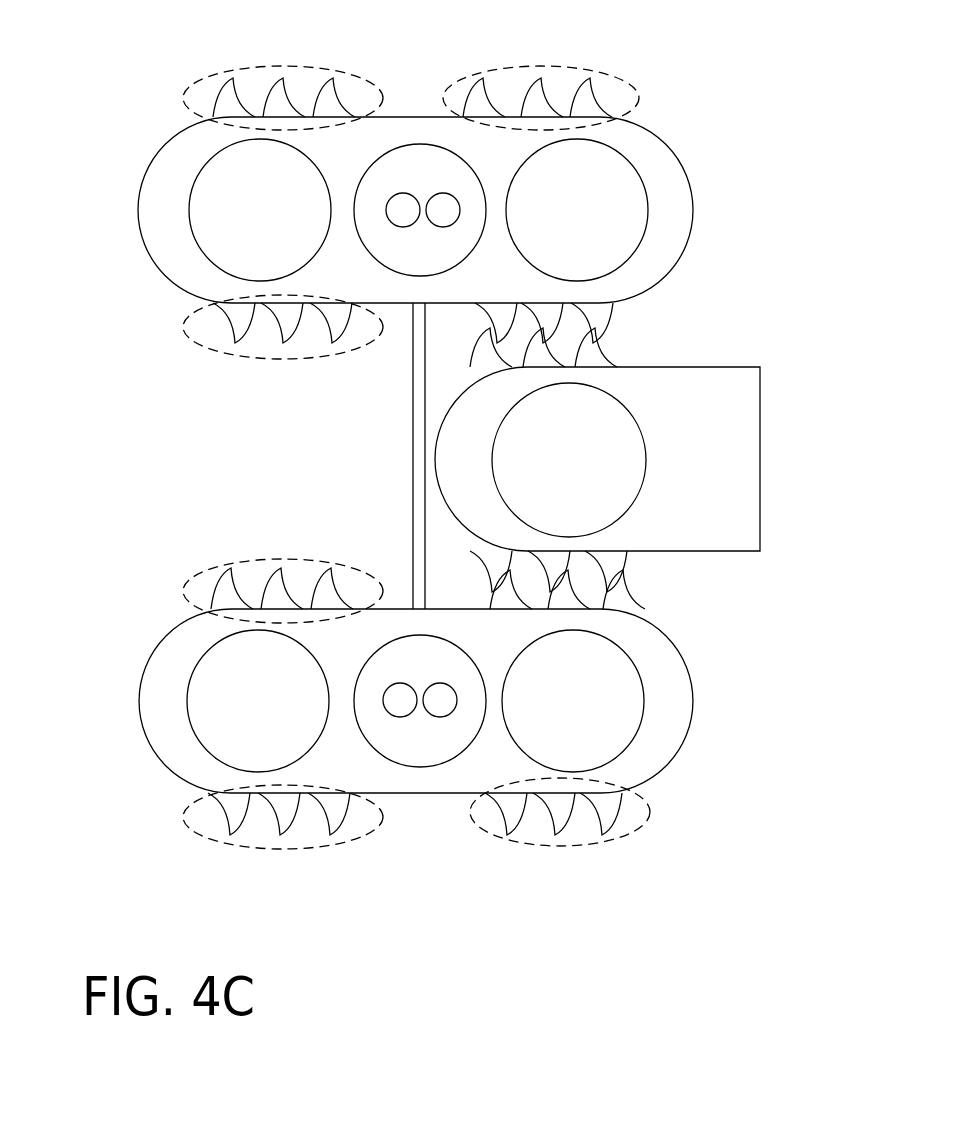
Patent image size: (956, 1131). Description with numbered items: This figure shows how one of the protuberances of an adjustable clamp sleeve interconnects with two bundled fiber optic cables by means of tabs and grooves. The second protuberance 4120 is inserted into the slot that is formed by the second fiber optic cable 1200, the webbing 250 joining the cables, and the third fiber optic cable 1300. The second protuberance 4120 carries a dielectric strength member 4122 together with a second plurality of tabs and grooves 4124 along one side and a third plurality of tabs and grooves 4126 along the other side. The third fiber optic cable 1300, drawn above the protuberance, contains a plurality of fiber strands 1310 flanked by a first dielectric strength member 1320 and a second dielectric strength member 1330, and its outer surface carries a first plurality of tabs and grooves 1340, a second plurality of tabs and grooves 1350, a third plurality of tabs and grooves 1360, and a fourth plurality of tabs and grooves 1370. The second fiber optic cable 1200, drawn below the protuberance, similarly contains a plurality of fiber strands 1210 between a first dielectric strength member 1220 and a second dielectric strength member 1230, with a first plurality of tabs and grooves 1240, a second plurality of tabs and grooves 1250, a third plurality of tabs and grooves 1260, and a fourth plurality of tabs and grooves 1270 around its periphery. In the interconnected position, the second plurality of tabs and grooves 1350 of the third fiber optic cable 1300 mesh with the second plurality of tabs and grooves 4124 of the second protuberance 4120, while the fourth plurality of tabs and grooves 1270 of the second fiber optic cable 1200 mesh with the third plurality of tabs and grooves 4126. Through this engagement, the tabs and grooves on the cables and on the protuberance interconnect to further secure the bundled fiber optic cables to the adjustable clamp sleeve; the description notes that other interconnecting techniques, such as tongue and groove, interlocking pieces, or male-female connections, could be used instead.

The third fiber optic cable 1300 is at (137, 213).
The first dielectric strength member 1320 is at (260, 210).
The second dielectric strength member 1330 is at (577, 210).
The plurality of fiber strands 1310 is at (413, 208).
The third plurality of tabs and grooves 1360 is at (283, 67).
The fourth plurality of tabs and grooves 1370 is at (542, 67).
The first plurality of tabs and grooves 1340 is at (283, 360).
The second plurality of tabs and grooves 1350 is at (565, 327).
The webbing 250 is at (413, 530).
The second protuberance 4120 is at (712, 460).
The dielectric strength member 4122 is at (569, 460).
The second plurality of tabs and grooves 4124 is at (543, 348).
The third plurality of tabs and grooves 4126 is at (540, 571).
The second fiber optic cable 1200 is at (139, 720).
The first dielectric strength member 1220 is at (258, 701).
The second dielectric strength member 1230 is at (573, 701).
The plurality of fiber strands 1210 is at (418, 717).
The third plurality of tabs and grooves 1260 is at (280, 557).
The fourth plurality of tabs and grooves 1270 is at (577, 590).
The first plurality of tabs and grooves 1240 is at (285, 848).
The second plurality of tabs and grooves 1250 is at (647, 812).